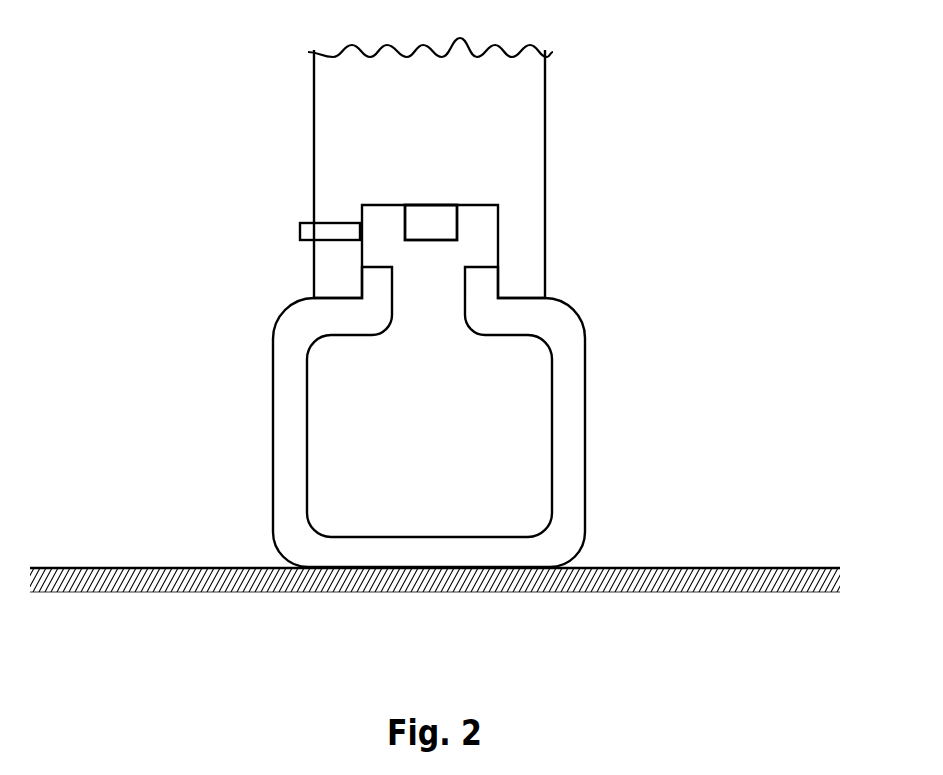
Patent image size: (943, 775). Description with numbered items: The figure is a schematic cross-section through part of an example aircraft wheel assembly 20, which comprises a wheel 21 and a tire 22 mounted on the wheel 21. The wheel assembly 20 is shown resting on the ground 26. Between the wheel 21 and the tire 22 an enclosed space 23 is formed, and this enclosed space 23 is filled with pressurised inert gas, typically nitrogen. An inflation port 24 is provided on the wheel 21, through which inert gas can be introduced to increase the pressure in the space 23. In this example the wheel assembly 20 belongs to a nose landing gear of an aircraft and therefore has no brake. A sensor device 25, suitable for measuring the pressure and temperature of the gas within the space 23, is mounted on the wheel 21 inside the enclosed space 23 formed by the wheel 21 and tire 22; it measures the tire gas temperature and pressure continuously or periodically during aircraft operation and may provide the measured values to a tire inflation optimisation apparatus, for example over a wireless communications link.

The wheel assembly 20 is at (689, 141).
The wheel 21 is at (352, 127).
The tire 22 is at (290, 358).
The enclosed space 23 is at (490, 457).
The inflation port 24 is at (313, 232).
The sensor device 25 is at (434, 222).
The ground 26 is at (102, 568).